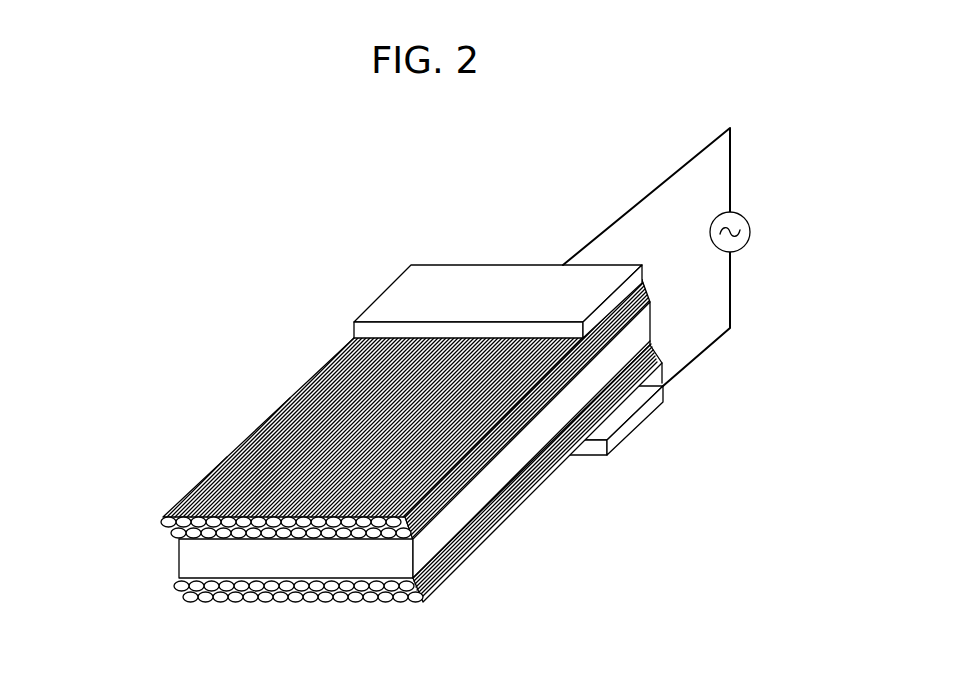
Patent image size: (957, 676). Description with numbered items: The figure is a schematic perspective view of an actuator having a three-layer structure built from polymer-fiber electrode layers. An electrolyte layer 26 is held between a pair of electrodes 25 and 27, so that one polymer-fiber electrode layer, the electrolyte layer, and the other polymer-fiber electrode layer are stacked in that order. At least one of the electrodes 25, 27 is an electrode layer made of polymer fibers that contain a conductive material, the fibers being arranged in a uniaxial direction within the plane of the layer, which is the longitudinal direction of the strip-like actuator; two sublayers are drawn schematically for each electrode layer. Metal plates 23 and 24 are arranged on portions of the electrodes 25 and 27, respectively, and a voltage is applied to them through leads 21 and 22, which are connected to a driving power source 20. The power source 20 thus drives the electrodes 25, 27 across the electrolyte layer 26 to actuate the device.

The driving power source 20 is at (743, 213).
The lead 21 is at (718, 137).
The lead 22 is at (733, 330).
The metal plate 23 is at (488, 272).
The metal plate 24 is at (643, 415).
The electrode 25 is at (267, 427).
The electrolyte layer 26 is at (197, 563).
The electrode 27 is at (183, 589).